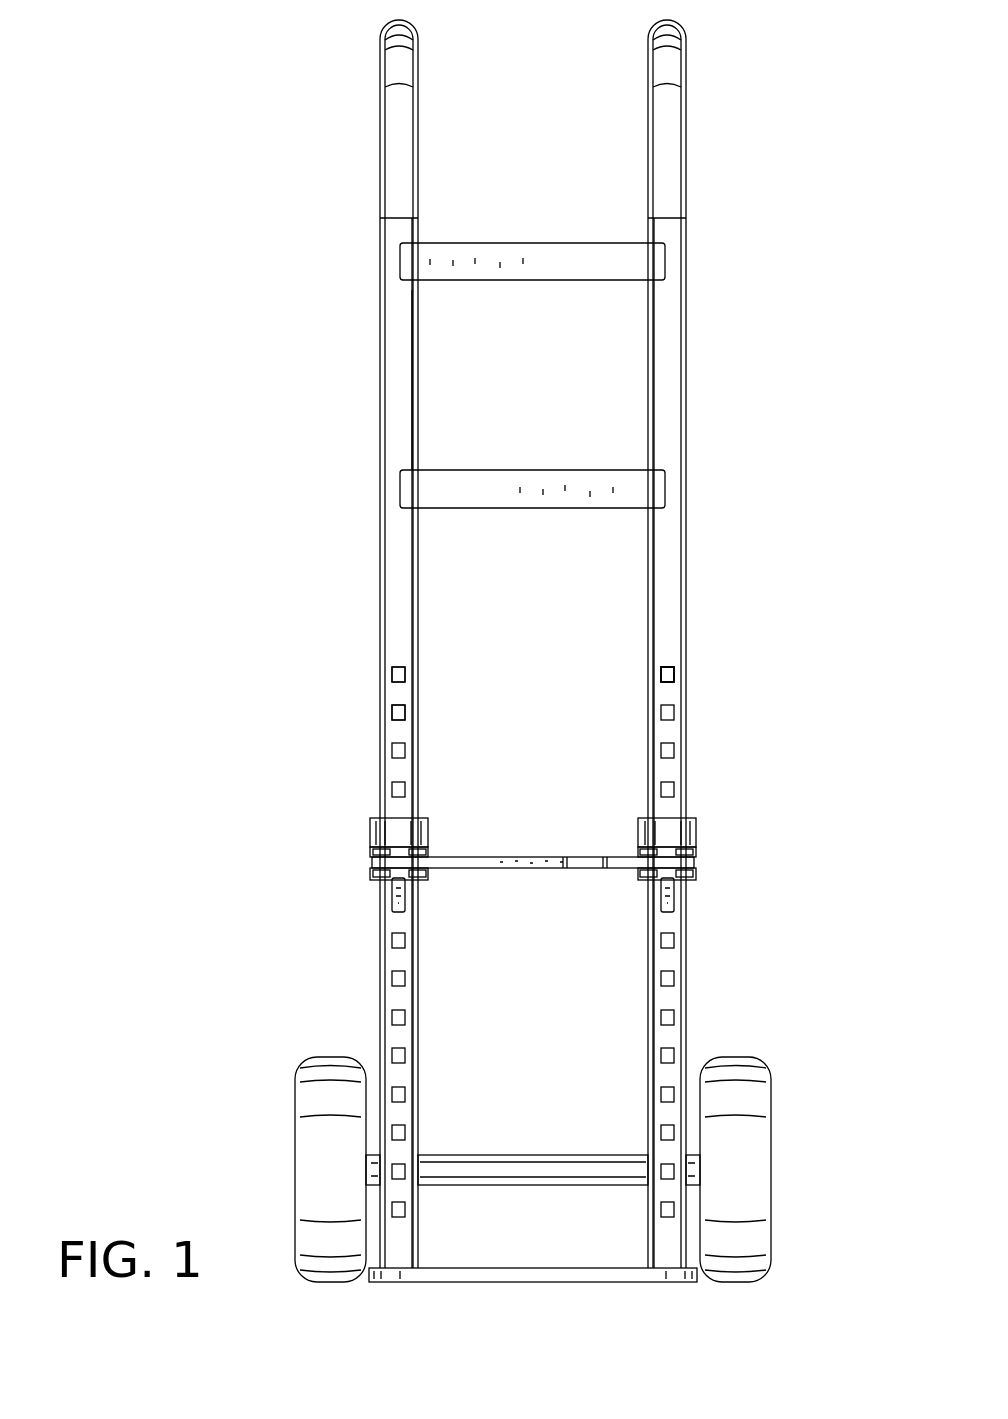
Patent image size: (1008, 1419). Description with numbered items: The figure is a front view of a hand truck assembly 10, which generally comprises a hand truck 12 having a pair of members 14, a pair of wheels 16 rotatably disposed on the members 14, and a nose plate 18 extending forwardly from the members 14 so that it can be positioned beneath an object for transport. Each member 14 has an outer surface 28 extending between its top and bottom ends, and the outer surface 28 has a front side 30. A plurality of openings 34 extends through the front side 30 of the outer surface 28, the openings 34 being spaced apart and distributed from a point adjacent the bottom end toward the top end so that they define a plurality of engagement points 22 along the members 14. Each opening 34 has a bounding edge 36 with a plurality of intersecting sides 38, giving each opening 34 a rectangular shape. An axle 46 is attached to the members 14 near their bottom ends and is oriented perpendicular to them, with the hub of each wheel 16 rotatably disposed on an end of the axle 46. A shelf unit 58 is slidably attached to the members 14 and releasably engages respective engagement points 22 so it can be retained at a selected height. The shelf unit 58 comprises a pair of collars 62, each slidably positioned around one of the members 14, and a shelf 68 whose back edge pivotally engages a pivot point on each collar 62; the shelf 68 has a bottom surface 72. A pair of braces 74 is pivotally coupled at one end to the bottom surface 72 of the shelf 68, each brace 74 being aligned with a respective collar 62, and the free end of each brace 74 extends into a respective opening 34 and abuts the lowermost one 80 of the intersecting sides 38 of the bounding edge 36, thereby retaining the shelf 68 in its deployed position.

The hand truck assembly 10 is at (158, 192).
The hand truck 12 is at (357, 384).
The members 14 is at (383, 325).
The wheels 16 is at (300, 1147).
The nose plate 18 is at (660, 1268).
The engagement points 22 is at (386, 676).
The outer surface 28 is at (395, 543).
The front side 30 is at (392, 430).
The openings 34 is at (405, 712).
The bounding edge 36 is at (668, 675).
The intersecting sides 38 is at (397, 672).
The axle 46 is at (456, 1155).
The shelf unit 58 is at (700, 862).
The collars 62 is at (385, 840).
The shelf 68 is at (605, 868).
The bottom surface 72 is at (565, 868).
The braces 74 is at (397, 882).
The lowermost one of the intersecting sides 80 is at (667, 680).